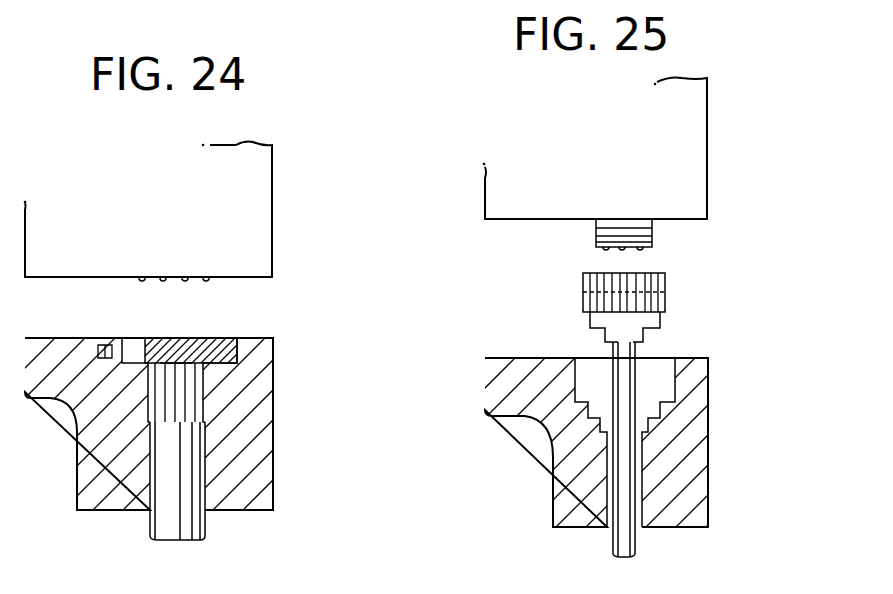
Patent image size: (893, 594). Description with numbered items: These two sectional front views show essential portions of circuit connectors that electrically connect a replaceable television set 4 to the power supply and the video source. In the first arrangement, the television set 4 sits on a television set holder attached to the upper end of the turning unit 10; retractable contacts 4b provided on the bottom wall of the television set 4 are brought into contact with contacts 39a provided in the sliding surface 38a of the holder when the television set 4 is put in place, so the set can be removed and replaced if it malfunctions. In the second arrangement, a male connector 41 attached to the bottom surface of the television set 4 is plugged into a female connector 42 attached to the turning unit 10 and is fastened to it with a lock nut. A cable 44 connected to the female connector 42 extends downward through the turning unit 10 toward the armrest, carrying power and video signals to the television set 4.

In FIG. 24, the television set 4 is at (267, 203).
In FIG. 25, the television set 4 is at (708, 124).
In FIG. 24, the retractable contacts 4b is at (224, 290).
In FIG. 24, the turning unit 10 is at (280, 440).
In FIG. 25, the turning unit 10 is at (714, 456).
In FIG. 24, the sliding surface 38a is at (252, 337).
In FIG. 24, the contacts 39a is at (153, 328).
In FIG. 25, the male connector 41 is at (652, 233).
In FIG. 25, the female connector 42 is at (665, 291).
In FIG. 25, the cable 44 is at (640, 378).